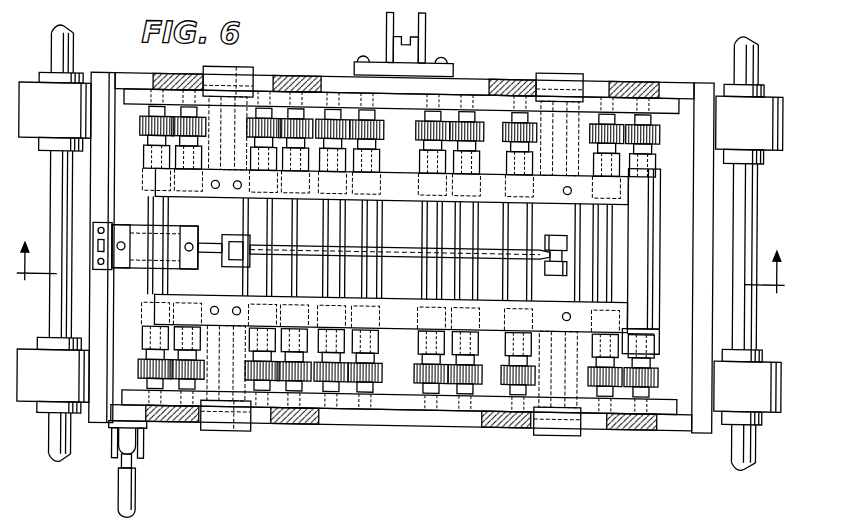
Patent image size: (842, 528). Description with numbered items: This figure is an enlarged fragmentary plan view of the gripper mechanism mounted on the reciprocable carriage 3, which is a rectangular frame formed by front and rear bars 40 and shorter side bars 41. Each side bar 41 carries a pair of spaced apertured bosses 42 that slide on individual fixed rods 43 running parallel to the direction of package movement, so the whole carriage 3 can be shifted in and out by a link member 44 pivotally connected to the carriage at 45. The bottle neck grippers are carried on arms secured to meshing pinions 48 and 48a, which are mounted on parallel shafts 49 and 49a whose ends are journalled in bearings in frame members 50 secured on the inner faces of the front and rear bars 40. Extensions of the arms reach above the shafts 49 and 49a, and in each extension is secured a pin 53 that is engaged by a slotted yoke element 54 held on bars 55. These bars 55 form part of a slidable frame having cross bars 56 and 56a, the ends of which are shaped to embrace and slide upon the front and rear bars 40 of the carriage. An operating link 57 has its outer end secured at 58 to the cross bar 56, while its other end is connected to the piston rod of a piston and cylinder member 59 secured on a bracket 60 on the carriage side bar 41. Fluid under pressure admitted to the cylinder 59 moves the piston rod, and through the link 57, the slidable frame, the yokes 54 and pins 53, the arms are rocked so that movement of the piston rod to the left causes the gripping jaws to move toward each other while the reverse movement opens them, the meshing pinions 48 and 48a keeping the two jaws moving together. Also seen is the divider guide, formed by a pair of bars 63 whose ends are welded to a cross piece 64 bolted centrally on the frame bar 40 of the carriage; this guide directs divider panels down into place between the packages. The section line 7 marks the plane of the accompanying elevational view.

The carriage 3 is at (84, 185).
The section line 7- 7 is at (401, 281).
The front and rear bars 40 is at (667, 73).
The side bars 41 is at (102, 85).
The apertured bosses 42 is at (35, 98).
The rods 43 is at (52, 452).
The link member 44 is at (138, 490).
The pivotal connection 45 is at (148, 437).
The pinion 48 is at (323, 370).
The pinion 48a is at (385, 378).
The shaft 49 is at (330, 283).
The shaft 49a is at (370, 287).
The frame members 50 is at (498, 96).
The pin 53 is at (648, 343).
The slotted yoke elements 54 is at (634, 335).
The bars 55 is at (625, 192).
The cross bar 56 is at (565, 90).
The cross bar 56a is at (235, 95).
The operating link 57 is at (396, 243).
The securing point 58 is at (572, 238).
The piston and cylinder member 59 is at (142, 240).
The bracket 60 is at (98, 235).
The bars 63 is at (385, 21).
The cross piece 64 is at (377, 62).